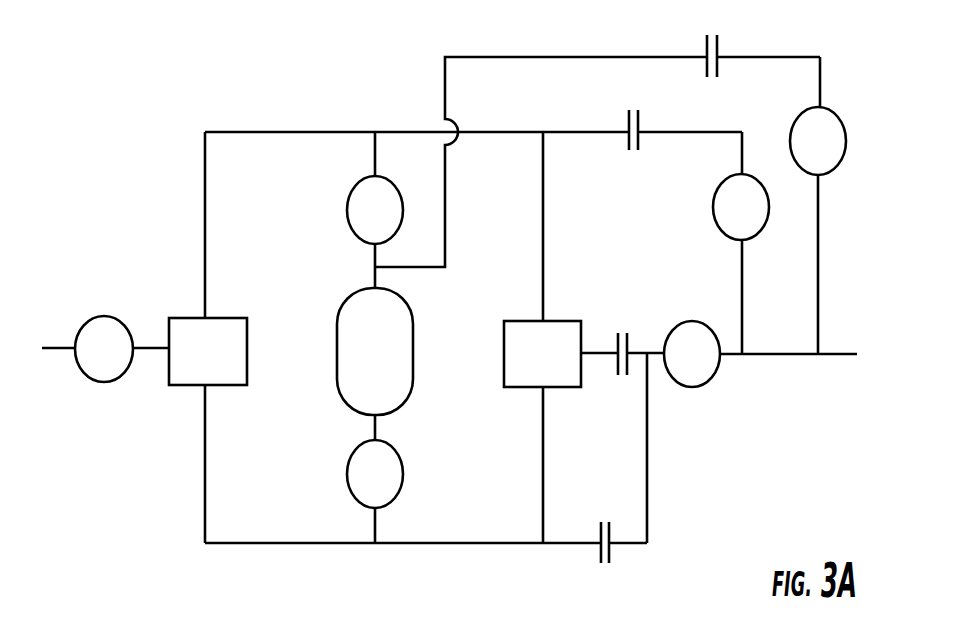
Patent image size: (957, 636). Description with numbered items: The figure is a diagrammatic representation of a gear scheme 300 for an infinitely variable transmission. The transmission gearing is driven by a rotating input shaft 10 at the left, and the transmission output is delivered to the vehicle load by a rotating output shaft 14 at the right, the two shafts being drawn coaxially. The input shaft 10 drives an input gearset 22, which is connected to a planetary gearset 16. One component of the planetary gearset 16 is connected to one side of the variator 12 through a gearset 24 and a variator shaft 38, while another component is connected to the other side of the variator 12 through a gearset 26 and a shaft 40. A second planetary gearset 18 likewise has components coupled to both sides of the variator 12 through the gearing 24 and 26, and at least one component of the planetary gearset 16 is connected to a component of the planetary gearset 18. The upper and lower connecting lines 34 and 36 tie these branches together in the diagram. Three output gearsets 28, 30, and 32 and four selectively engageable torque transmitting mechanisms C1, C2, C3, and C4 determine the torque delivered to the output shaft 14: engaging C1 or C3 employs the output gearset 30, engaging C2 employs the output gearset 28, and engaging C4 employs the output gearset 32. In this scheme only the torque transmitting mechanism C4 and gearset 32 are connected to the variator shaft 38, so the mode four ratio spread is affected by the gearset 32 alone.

The gear scheme 300 is at (130, 88).
The input shaft 10 is at (60, 348).
The variator 12 is at (363, 364).
The output shaft 14 is at (840, 354).
The planetary gearset 16 is at (196, 362).
The planetary gearset 18 is at (531, 365).
The input gearset 22 is at (92, 362).
The gearset 24 is at (363, 222).
The gearset 26 is at (363, 486).
The output gearset 28 is at (729, 219).
The output gearset 30 is at (680, 366).
The output gearset 32 is at (806, 152).
The upper rail 34 is at (299, 132).
The lower rail 36 is at (277, 544).
The variator shaft 38 is at (400, 263).
The shaft 40 is at (377, 428).
The torque transmitting mechanism C1 is at (622, 340).
The torque transmitting mechanism C2 is at (632, 147).
The torque transmitting mechanism C3 is at (604, 560).
The torque transmitting mechanism C4 is at (712, 74).